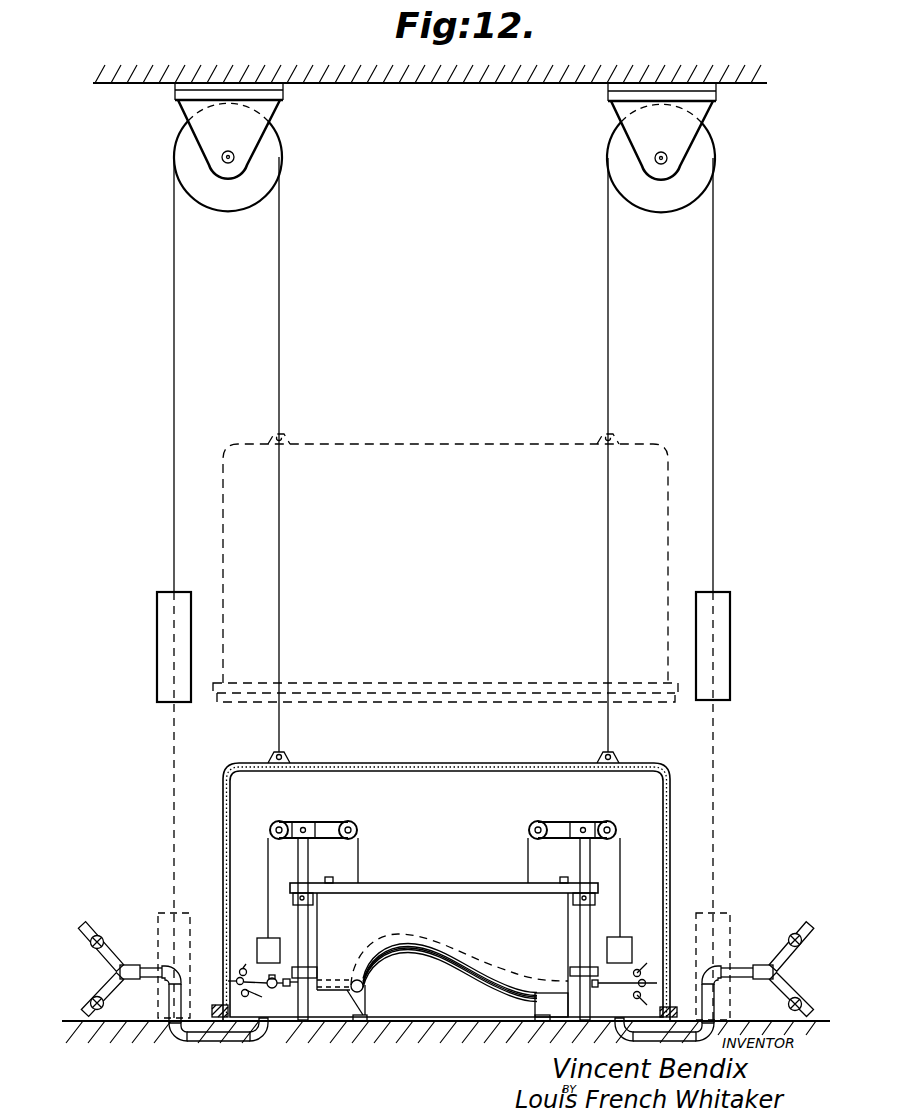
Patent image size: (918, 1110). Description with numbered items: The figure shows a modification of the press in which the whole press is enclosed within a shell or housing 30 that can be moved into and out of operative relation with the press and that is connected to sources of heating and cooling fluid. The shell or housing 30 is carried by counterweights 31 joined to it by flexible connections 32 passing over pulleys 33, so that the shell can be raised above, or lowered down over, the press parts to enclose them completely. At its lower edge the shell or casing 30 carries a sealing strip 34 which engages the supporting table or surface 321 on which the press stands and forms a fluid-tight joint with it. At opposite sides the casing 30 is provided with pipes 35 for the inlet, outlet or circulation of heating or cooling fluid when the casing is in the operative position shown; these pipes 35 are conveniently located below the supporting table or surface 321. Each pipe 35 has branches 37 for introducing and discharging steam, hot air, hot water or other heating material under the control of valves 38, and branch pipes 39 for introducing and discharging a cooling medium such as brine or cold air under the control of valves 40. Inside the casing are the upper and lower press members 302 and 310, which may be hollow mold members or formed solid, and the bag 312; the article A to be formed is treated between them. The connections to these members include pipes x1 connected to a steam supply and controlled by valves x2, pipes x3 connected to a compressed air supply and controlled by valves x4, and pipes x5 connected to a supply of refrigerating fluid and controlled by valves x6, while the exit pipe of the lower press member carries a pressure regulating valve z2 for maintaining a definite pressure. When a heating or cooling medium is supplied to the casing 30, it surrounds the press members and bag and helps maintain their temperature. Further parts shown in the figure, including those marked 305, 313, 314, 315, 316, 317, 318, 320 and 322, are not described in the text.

The shell or housing 30 is at (433, 443).
The counterweights 31 is at (157, 617).
The flexible connections 32 is at (174, 500).
The pulleys 33 is at (190, 170).
The sealing strip 34 is at (218, 1008).
The pipes 35 is at (146, 966).
The branches 37 is at (83, 922).
The valves 38 is at (99, 935).
The branch pipes 39 is at (110, 979).
The valves 40 is at (91, 1001).
The upper press member 302 is at (413, 1002).
The hose fitting 305 is at (366, 981).
The lower press member 310 is at (417, 905).
The bag 312 is at (461, 956).
The pipe 313 is at (333, 998).
The bracket 314 is at (313, 898).
The stop 315 is at (330, 876).
The weight 316 is at (266, 938).
The link 317 is at (359, 844).
The lever 318 is at (348, 821).
The post 320 is at (306, 848).
The supporting table or surface 321 is at (478, 1027).
The foot 322 is at (350, 1022).
The article A is at (433, 952).
The steam supply pipes x1 is at (243, 968).
The steam valves x2 is at (243, 978).
The compressed air pipes x3 is at (236, 980).
The compressed air valves x4 is at (240, 977).
The refrigerating fluid pipes x5 is at (246, 997).
The refrigerating fluid valves x6 is at (258, 997).
The pressure regulating valve z2 is at (462, 989).